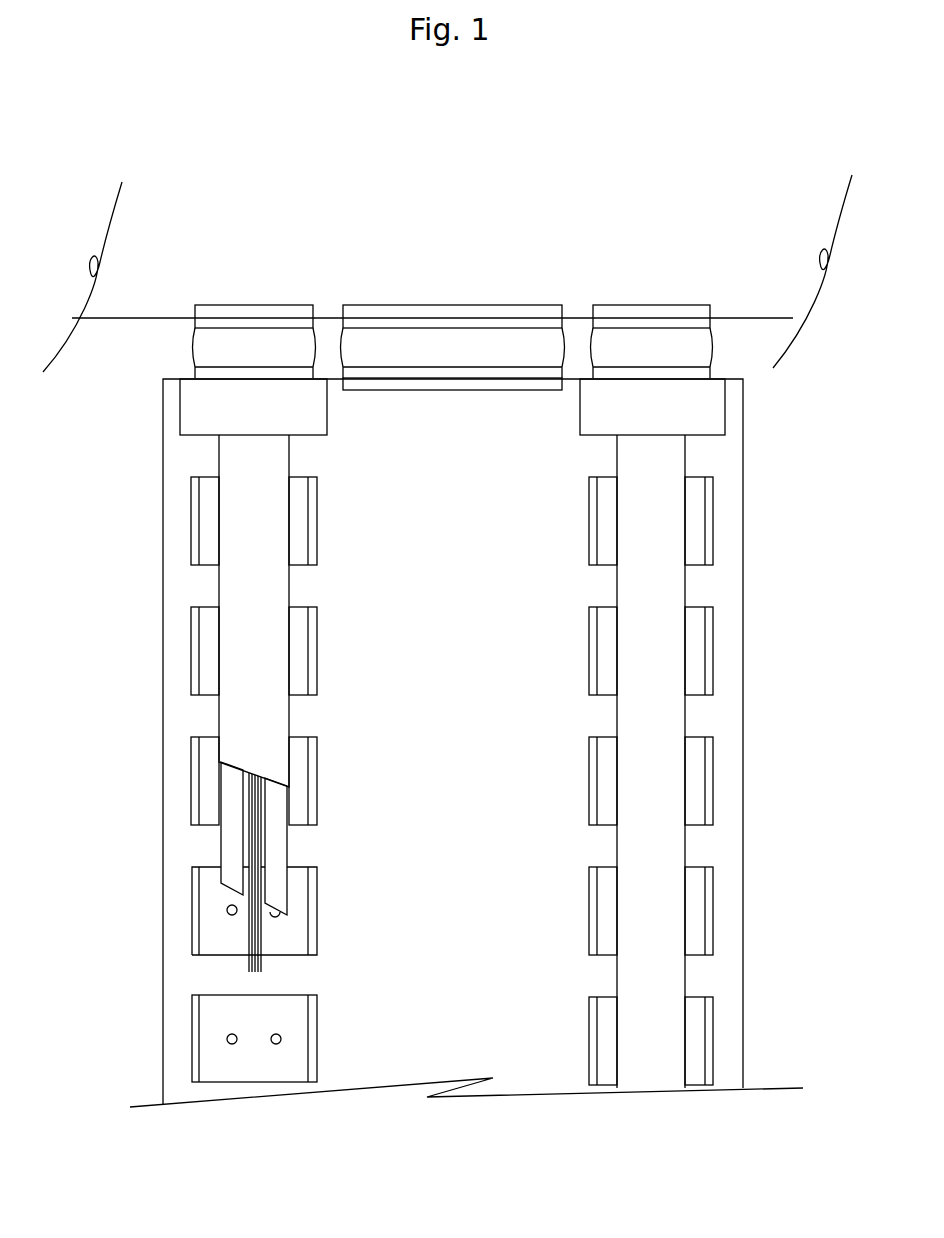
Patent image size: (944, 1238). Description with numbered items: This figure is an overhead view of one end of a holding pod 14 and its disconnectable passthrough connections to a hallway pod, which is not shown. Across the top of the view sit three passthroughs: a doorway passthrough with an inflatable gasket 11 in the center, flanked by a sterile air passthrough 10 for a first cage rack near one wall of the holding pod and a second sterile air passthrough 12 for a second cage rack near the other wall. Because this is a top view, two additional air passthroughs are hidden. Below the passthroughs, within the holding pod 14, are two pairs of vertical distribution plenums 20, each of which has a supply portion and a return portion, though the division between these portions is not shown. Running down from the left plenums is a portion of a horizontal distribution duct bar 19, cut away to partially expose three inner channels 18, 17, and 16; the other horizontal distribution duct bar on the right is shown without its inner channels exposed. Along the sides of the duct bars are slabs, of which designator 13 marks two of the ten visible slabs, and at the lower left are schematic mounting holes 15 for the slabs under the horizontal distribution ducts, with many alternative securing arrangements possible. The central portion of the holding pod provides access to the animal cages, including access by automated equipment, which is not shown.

The sterile air passthrough 10 is at (263, 350).
The doorway passthrough with inflatable gasket 11 is at (468, 347).
The sterile air passthrough 12 is at (655, 347).
The slabs 13 is at (693, 512).
The holding pod 14 is at (743, 865).
The mounting holes 15 is at (227, 1037).
The channel 16 is at (257, 923).
The channel 17 is at (275, 837).
The channel 18 is at (230, 837).
The horizontal distribution duct bar 19 is at (250, 587).
The vertical distribution plenums 20 is at (247, 402).